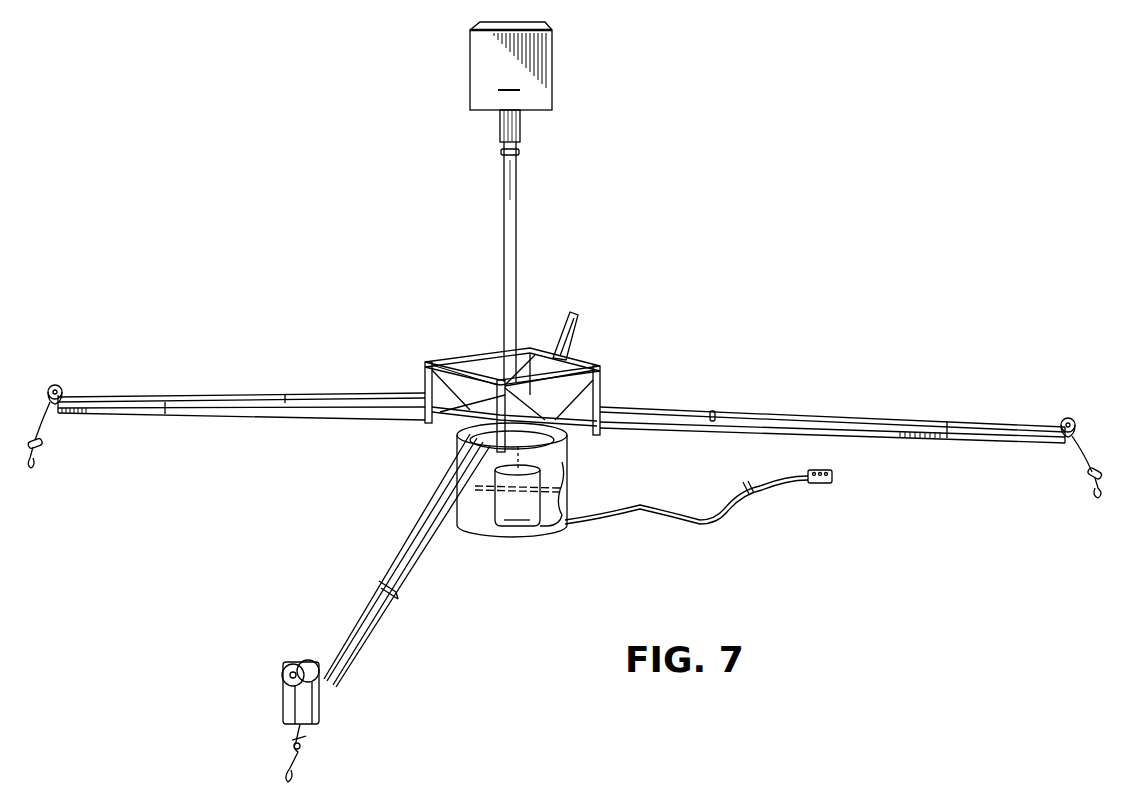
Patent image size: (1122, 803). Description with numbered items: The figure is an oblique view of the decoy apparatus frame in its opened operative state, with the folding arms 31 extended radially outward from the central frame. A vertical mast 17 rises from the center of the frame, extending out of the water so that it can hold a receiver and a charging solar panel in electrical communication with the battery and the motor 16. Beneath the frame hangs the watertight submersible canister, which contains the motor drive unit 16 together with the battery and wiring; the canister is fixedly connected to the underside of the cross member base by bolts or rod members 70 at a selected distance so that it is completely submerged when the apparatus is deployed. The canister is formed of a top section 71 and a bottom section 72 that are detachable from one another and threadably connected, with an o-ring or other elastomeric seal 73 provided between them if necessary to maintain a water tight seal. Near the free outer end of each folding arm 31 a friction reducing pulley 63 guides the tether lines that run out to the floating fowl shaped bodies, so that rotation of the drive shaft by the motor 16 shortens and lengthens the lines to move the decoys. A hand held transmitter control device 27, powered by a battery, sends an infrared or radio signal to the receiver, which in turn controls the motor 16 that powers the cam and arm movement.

The motor drive unit 16 is at (511, 274).
The mast 17 is at (515, 291).
The hand held transmitter control device 27 is at (820, 486).
The folding arm 31 is at (222, 411).
The pulley 63 is at (1066, 418).
The bolt 70 is at (598, 396).
The top section of canister 71 is at (568, 450).
The bottom section of canister 72 is at (545, 530).
The seal 73 is at (560, 490).